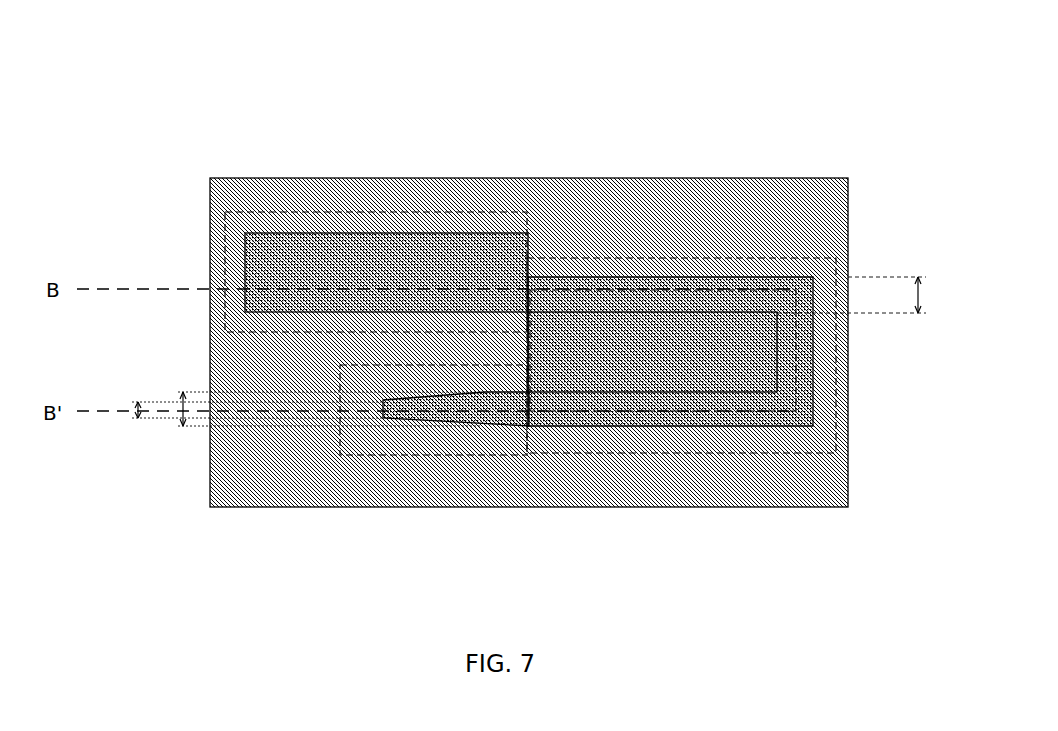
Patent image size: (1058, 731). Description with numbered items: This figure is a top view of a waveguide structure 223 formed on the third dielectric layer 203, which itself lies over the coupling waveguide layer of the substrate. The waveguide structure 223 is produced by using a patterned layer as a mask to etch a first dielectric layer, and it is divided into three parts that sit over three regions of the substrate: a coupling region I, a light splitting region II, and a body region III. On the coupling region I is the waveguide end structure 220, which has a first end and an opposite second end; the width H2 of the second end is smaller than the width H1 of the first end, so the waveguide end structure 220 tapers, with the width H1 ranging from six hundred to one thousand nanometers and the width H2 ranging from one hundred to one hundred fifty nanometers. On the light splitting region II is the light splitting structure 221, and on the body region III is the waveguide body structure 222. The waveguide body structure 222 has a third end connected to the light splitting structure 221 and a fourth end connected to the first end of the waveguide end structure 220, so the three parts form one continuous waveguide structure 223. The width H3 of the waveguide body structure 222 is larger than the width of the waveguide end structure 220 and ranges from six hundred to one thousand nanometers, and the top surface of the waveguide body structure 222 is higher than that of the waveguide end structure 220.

The third dielectric layer 203 is at (827, 214).
The waveguide end structure 220 is at (485, 403).
The light splitting structure 221 is at (400, 262).
The waveguide body structure 222 is at (598, 305).
The waveguide structure 223 is at (713, 92).
The coupling region I is at (367, 455).
The light splitting region II is at (250, 210).
The body region III is at (833, 377).
The width of the first end H1 is at (181, 392).
The width of the second end H2 is at (137, 402).
The width of the waveguide body structure H3 is at (861, 295).